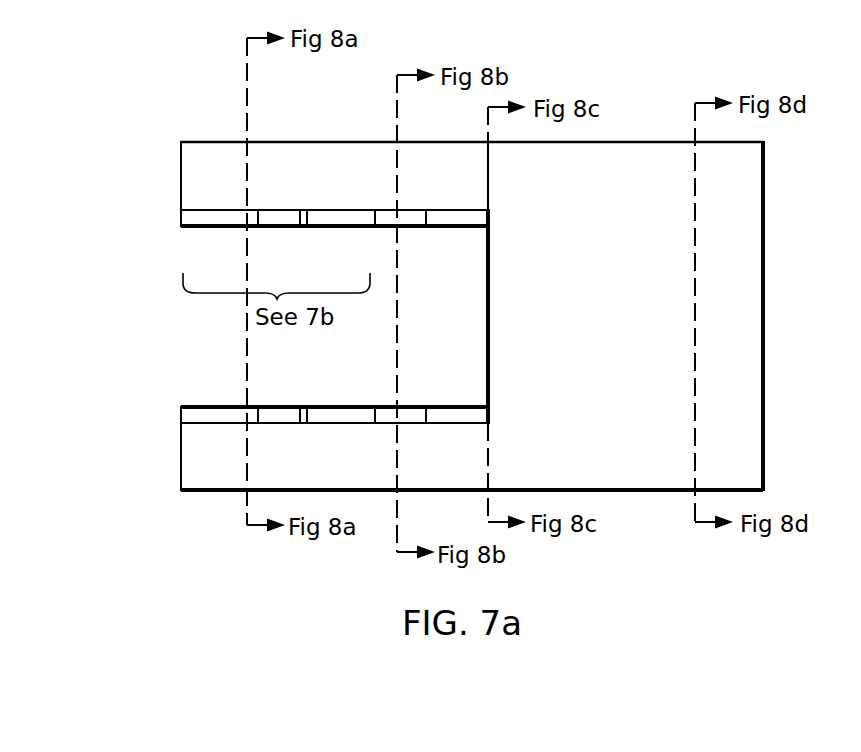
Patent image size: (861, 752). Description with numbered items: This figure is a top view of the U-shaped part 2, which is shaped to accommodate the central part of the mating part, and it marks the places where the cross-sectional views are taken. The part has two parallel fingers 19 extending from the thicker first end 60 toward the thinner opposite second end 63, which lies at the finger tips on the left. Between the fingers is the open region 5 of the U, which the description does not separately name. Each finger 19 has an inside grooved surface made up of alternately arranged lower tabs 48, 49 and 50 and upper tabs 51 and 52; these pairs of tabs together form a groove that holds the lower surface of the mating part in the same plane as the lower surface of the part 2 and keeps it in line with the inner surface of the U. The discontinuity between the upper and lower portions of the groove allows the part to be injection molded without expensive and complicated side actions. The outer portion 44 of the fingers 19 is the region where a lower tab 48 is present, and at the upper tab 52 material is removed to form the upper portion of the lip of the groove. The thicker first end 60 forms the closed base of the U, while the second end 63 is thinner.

The U-shaped part 2 is at (735, 292).
The cavity 5 is at (656, 312).
The fingers 19 is at (340, 180).
The outer portion of fingers 44 is at (199, 178).
The lower tab 48 is at (202, 218).
The lower tab 49 is at (342, 217).
The lower tab 50 is at (462, 213).
The upper tab 51 is at (275, 218).
The upper tab 52 is at (407, 218).
The thicker first end 60 is at (765, 190).
The thinner second end 63 is at (181, 193).